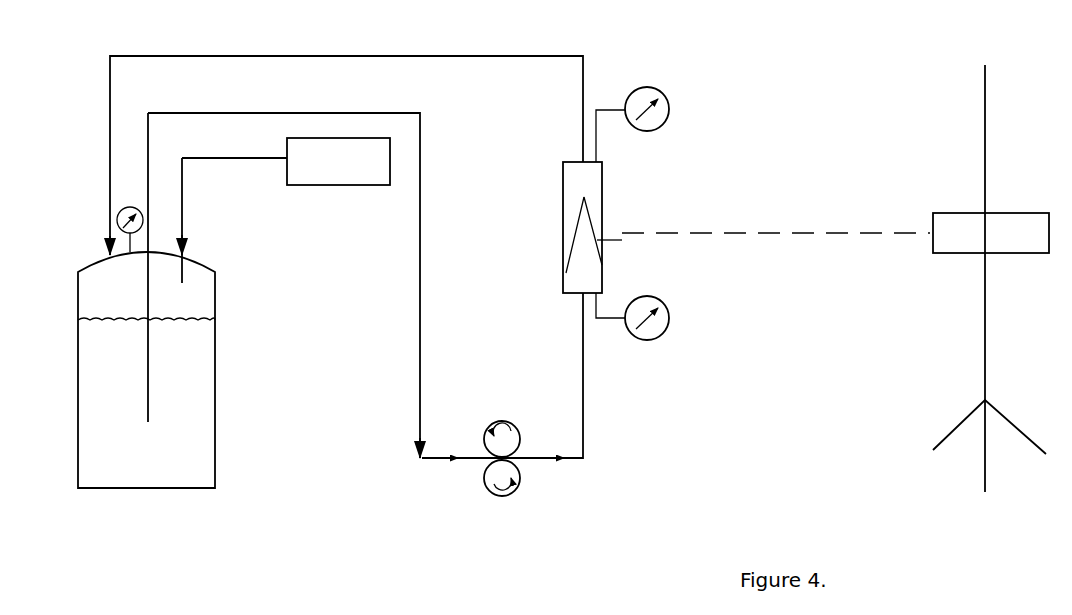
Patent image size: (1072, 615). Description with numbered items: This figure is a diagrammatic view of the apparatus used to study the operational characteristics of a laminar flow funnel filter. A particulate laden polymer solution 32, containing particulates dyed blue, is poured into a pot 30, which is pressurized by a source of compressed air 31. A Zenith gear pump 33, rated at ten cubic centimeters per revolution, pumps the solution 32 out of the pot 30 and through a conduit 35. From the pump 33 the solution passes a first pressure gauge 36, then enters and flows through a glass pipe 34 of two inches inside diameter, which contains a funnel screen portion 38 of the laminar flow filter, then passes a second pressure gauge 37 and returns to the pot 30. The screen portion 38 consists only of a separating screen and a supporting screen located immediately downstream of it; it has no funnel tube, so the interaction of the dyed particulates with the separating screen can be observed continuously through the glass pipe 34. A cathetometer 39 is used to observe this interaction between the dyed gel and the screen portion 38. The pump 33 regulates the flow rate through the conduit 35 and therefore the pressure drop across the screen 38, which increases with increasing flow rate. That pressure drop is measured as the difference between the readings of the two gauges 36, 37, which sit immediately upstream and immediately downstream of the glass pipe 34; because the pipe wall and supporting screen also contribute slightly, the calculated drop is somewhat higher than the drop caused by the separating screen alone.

The pot 30 is at (103, 488).
The source of compressed air 31 is at (320, 185).
The particulate laden polymer solution 32 is at (203, 417).
The Zenith pump 33 is at (487, 487).
The glass pipe 34 is at (603, 176).
The conduit 35 is at (330, 56).
The first pressure gauge 36 is at (670, 312).
The second pressure gauge 37 is at (669, 113).
The funnel screen portion 38 is at (622, 240).
The cathetometer 39 is at (987, 265).